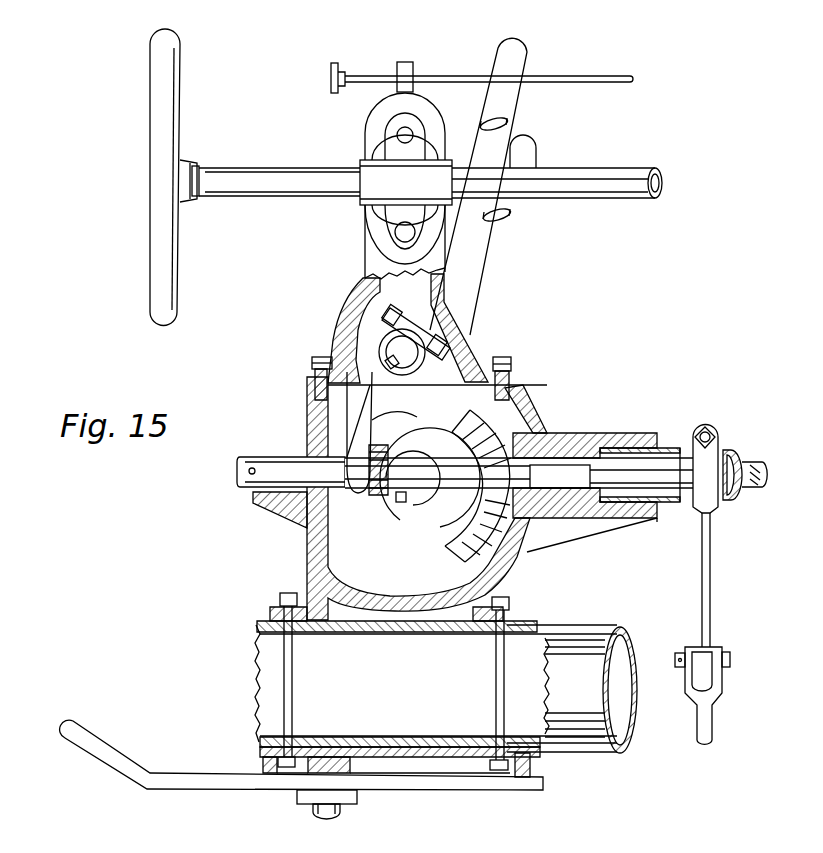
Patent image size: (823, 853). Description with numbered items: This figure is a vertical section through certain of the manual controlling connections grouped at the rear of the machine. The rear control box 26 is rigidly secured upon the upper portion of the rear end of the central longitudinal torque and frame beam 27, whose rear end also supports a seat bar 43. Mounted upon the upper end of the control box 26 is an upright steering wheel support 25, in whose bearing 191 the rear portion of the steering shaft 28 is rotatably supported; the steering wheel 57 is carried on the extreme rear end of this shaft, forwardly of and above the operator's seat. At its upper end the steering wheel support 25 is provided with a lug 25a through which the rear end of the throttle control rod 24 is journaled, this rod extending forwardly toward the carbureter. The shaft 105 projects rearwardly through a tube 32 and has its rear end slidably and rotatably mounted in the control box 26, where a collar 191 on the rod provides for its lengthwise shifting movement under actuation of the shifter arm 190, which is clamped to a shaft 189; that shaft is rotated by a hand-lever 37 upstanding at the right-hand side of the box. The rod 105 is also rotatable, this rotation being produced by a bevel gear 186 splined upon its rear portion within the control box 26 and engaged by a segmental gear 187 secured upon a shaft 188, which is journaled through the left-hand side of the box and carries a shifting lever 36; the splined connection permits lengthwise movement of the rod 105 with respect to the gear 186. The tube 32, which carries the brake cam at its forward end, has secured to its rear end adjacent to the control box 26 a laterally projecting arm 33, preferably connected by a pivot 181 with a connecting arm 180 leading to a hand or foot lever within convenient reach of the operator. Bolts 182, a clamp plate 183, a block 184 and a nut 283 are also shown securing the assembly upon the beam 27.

The throttle control rod 24 is at (612, 70).
The steering wheel support 25 is at (356, 261).
The lug 25a is at (413, 73).
The control box 26 is at (296, 551).
The torque and frame beam 27 is at (607, 753).
The steering shaft 28 is at (283, 161).
The tube 32 is at (733, 505).
The arm 33 is at (714, 590).
The shifting lever 36 is at (535, 153).
The hand-lever 37 is at (524, 53).
The seat bar 43 is at (512, 793).
The steering wheel 57 is at (176, 306).
The rod 105 is at (275, 456).
The connecting arm 180 is at (719, 723).
The pivot 181 is at (730, 660).
The clamp bolts 182 is at (293, 665).
The clamp plate 183 is at (533, 767).
The block 184 is at (360, 795).
The bevel gear 186 is at (510, 448).
The segmental gear 187 is at (443, 533).
The shaft 188 is at (388, 494).
The shaft 189 is at (403, 362).
The shifter arm 190 is at (352, 496).
The collar 191 is at (397, 188).
The nut 283 is at (333, 819).